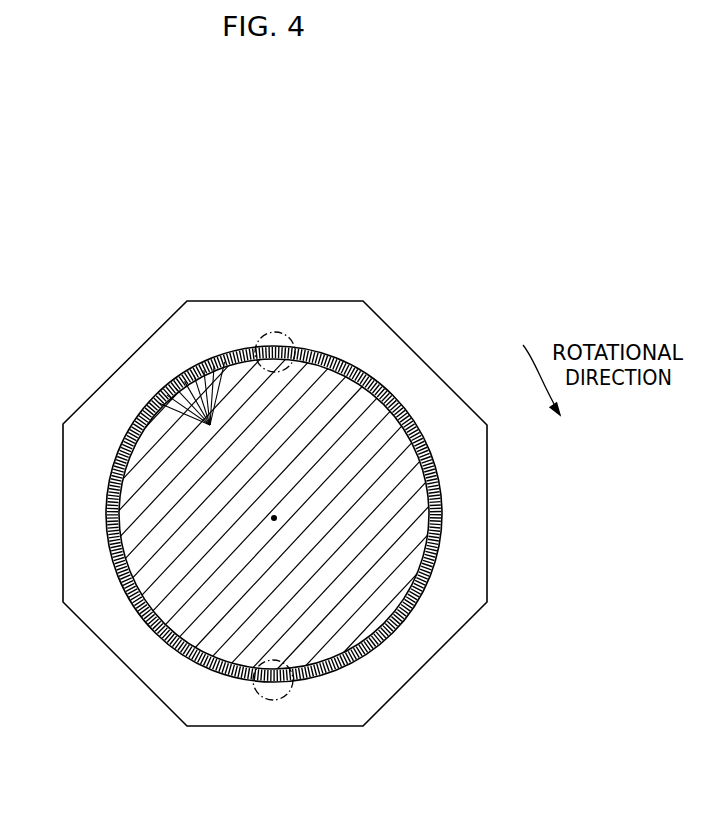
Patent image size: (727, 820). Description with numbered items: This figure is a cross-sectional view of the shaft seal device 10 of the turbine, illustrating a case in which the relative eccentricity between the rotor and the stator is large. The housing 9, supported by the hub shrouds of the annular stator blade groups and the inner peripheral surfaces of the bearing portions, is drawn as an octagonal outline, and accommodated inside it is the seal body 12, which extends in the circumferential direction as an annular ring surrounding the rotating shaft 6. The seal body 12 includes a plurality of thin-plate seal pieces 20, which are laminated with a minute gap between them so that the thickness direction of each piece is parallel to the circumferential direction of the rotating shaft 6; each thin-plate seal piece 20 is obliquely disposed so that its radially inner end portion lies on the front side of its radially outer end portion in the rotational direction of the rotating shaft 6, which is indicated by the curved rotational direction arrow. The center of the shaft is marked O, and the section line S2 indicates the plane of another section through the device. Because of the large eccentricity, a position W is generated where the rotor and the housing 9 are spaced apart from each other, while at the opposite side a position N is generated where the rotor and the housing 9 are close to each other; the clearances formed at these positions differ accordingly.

The shaft seal device 10 is at (498, 327).
The housing 9 is at (463, 475).
The seal body 12 is at (447, 501).
The rotating shaft 6 is at (378, 597).
The thin-plate seal piece 20 is at (195, 408).
The position where the rotor and the housing are spaced apart W is at (270, 332).
The position where the rotor and the housing are close N is at (287, 698).
The center O is at (274, 518).
The second surface S2 is at (328, 327).